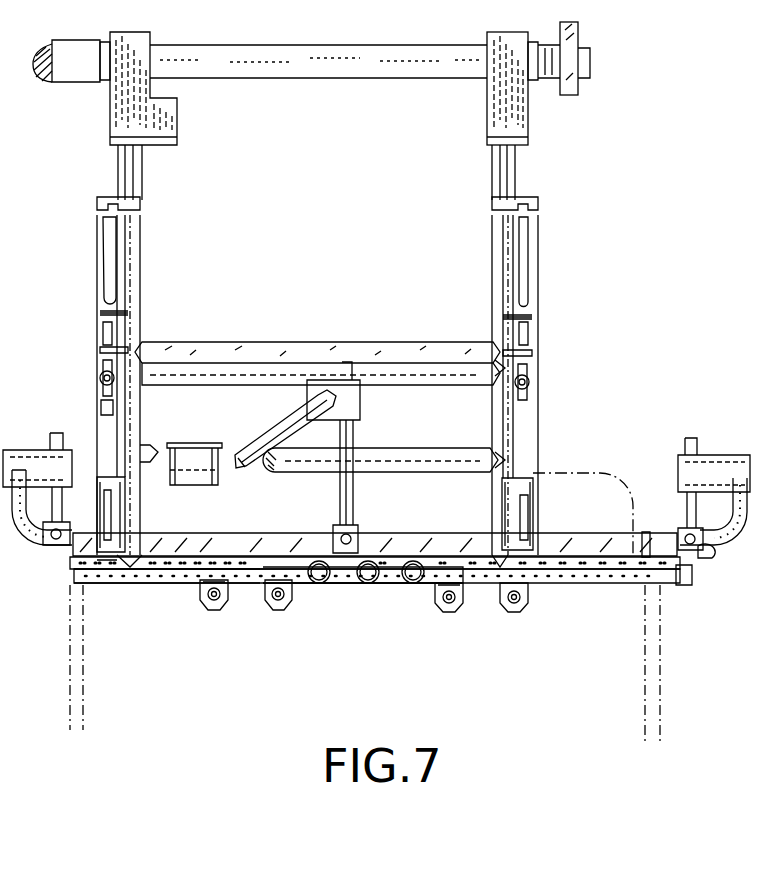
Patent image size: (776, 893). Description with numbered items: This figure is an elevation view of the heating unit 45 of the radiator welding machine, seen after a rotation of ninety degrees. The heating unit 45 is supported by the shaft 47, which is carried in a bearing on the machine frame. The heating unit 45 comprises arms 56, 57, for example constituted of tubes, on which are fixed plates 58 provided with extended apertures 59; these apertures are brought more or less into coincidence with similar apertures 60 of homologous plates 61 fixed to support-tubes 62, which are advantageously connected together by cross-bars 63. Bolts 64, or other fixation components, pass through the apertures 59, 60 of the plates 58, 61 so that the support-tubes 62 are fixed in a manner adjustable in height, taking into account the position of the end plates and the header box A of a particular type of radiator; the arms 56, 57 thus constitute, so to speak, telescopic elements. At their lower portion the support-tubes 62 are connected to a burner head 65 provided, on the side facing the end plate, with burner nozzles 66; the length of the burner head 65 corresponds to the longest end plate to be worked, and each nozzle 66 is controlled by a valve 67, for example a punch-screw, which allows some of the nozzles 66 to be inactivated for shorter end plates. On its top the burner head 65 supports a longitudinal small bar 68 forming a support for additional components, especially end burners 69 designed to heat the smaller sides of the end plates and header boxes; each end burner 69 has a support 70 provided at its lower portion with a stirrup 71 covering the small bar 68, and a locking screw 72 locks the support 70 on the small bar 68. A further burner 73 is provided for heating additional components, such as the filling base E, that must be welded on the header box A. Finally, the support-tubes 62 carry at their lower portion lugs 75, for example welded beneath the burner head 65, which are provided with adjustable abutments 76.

The shaft 47 is at (367, 67).
The arm 56 is at (142, 193).
The arm 57 is at (552, 186).
The plate 58 is at (97, 284).
The extended aperture 59 is at (103, 245).
The aperture 60 is at (103, 425).
The plate 61 is at (120, 517).
The support-tube 62 is at (140, 430).
The cross-bar 63 is at (403, 370).
The bolt 64 is at (100, 374).
The burner head 65 is at (163, 582).
The burner nozzle 66 is at (240, 560).
The valve 67 is at (205, 573).
The small bar 68 is at (302, 540).
The end burner 69 is at (22, 525).
The support 70 is at (378, 443).
The stirrup 71 is at (358, 534).
The locking screw 72 is at (347, 545).
The burner 73 is at (262, 437).
The lug 75 is at (222, 610).
The adjustable abutment 76 is at (207, 607).
The heating unit 45 is at (369, 612).
The filling base E is at (185, 445).
The header box A is at (605, 478).